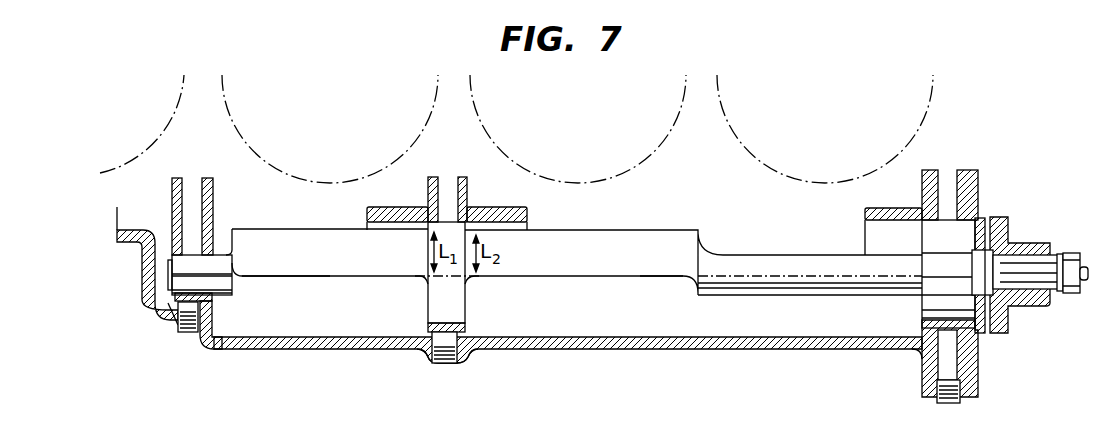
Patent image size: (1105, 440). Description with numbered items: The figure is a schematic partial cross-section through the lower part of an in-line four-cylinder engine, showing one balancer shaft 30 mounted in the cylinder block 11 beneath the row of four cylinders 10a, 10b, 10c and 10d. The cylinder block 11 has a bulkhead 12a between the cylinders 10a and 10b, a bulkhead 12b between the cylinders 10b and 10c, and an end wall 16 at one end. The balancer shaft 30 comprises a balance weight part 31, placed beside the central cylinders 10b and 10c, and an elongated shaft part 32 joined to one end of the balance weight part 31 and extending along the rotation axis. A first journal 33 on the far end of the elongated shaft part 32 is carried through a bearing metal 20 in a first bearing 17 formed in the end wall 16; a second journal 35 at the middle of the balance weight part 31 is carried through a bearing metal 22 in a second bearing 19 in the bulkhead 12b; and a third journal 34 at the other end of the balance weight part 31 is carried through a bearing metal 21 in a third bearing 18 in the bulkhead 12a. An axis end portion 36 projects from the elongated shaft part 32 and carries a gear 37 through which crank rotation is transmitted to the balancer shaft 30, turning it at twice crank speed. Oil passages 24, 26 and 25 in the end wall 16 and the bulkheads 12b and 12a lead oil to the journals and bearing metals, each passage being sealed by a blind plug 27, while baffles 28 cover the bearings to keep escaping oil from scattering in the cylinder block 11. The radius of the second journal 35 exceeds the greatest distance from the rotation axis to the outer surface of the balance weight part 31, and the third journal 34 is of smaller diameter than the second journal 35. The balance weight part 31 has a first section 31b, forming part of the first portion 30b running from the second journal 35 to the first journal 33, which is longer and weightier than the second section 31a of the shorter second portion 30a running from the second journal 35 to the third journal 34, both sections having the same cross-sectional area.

The cylinder 10a is at (127, 150).
The cylinder 10b is at (303, 165).
The cylinder 10c is at (578, 170).
The cylinder 10d is at (793, 165).
The cylinder block 11 is at (620, 350).
The bulkhead 12a is at (213, 188).
The bulkhead 12b is at (467, 180).
The end wall 16 is at (980, 183).
The first bearing 17 is at (930, 350).
The third bearing 18 is at (172, 320).
The second bearing 19 is at (432, 357).
The bearing metal 20 is at (950, 333).
The bearing metal 21 is at (203, 307).
The bearing metal 22 is at (448, 331).
The oil passage 24 is at (948, 177).
The oil passage 25 is at (195, 183).
The oil passage 26 is at (447, 177).
The blind plug 27 is at (190, 332).
The baffle 28 is at (400, 207).
The balancer shaft 30 is at (600, 243).
The second portion 30a is at (317, 285).
The first portion 30b is at (665, 286).
The balance weight part 31 is at (474, 257).
The second section 31a is at (383, 265).
The first section 31b is at (578, 268).
The elongated shaft part 32 is at (787, 265).
The first journal 33 is at (932, 275).
The third journal 34 is at (223, 282).
The second journal 35 is at (457, 307).
The axis end portion 36 is at (1037, 263).
The gear 37 is at (1000, 220).